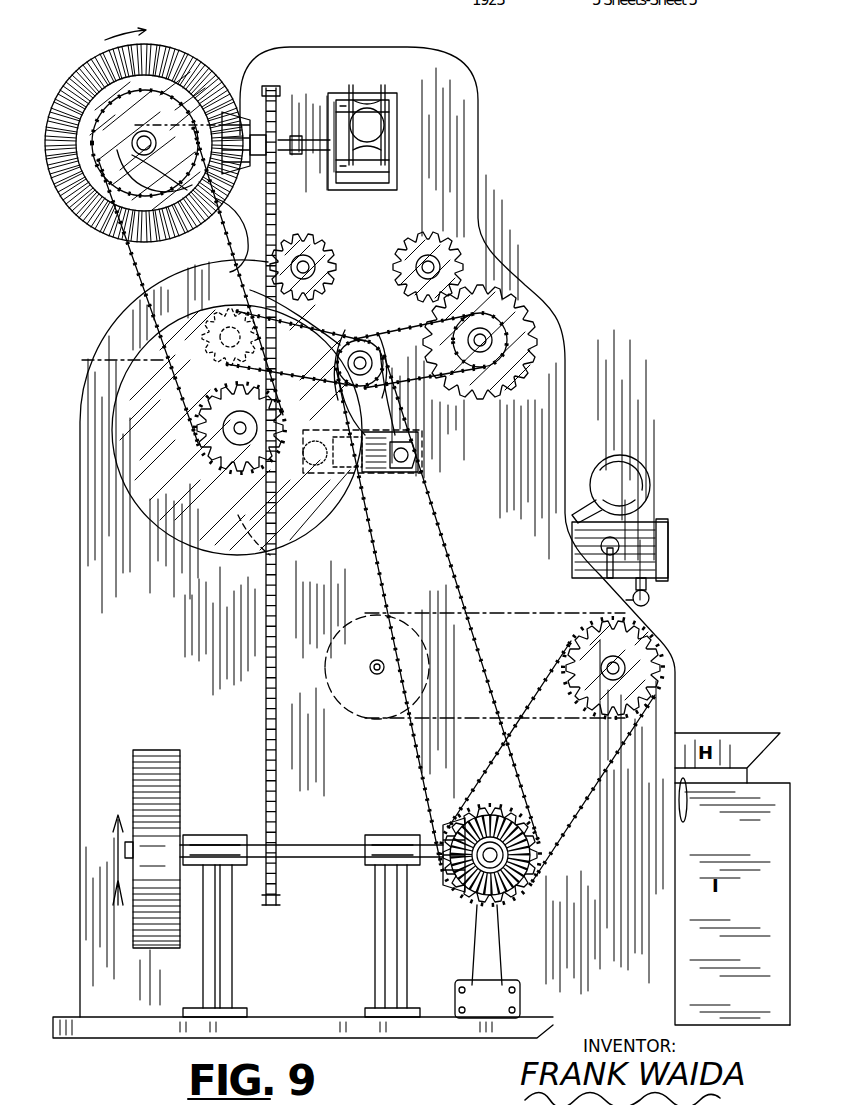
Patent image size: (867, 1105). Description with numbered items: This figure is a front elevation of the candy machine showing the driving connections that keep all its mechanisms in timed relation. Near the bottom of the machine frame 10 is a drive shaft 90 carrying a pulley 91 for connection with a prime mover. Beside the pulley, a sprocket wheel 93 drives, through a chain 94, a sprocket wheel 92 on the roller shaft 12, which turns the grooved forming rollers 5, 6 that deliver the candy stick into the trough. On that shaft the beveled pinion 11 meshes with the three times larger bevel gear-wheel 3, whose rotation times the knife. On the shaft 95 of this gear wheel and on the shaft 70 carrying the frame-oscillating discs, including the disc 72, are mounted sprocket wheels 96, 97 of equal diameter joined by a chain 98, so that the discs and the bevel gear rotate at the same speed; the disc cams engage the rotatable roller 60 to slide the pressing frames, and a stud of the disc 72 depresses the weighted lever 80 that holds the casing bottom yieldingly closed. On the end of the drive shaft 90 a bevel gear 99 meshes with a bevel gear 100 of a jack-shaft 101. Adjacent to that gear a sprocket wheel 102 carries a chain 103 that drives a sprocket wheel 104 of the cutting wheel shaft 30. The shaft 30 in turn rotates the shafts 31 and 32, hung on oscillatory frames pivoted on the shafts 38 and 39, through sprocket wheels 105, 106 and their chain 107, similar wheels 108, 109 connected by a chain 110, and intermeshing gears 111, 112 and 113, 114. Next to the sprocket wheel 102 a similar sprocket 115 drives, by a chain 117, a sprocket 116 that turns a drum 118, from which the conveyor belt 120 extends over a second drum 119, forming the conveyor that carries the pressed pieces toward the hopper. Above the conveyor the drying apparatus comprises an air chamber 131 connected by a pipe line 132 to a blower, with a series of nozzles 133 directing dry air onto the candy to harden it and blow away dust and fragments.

The beveled gear-wheel 3 is at (157, 54).
The roller 5 is at (378, 88).
The roller 6 is at (356, 95).
The machine frame 10 is at (466, 118).
The beveled pinion 11 is at (262, 100).
The roller drive shaft 12 is at (318, 138).
The cutting wheel shaft 30 is at (362, 388).
The shaft 31 is at (438, 266).
The shaft 32 is at (312, 266).
The shaft 38 is at (520, 330).
The shaft 39 is at (112, 360).
The rotatable roller 60 is at (375, 470).
The shaft 70 is at (140, 508).
The disc 72 is at (120, 525).
The weighted lever 80 is at (642, 478).
The drive shaft 90 is at (348, 845).
The pulley 91 is at (135, 765).
The sprocket wheel 92 is at (288, 88).
The sprocket wheel 93 is at (277, 893).
The chain 94 is at (277, 752).
The shaft 95 is at (125, 232).
The sprocket wheel 96 is at (225, 430).
The sprocket wheel 97 is at (85, 212).
The chain 98 is at (112, 323).
The bevel gear 99 is at (445, 882).
The bevel gear 100 is at (498, 900).
The jack-shaft 101 is at (530, 880).
The sprocket wheel 102 is at (520, 812).
The chain 103 is at (478, 655).
The sprocket wheel 104 is at (360, 348).
The sprocket wheel 105 is at (375, 350).
The sprocket wheel 106 is at (177, 268).
The chain 107 is at (340, 338).
The sprocket wheel 108 is at (378, 366).
The sprocket wheel 109 is at (505, 352).
The chain 110 is at (416, 380).
The gear 111 is at (510, 318).
The gear 112 is at (442, 248).
The gear 113 is at (213, 272).
The gear 114 is at (310, 246).
The sprocket 115 is at (545, 862).
The sprocket 116 is at (610, 710).
The chain 117 is at (598, 775).
The drum 118 is at (568, 722).
The drum 119 is at (365, 720).
The conveyor belt 120 is at (476, 718).
The air chamber 131 is at (670, 530).
The pipe line 132 is at (650, 600).
The nozzles 133 is at (622, 540).